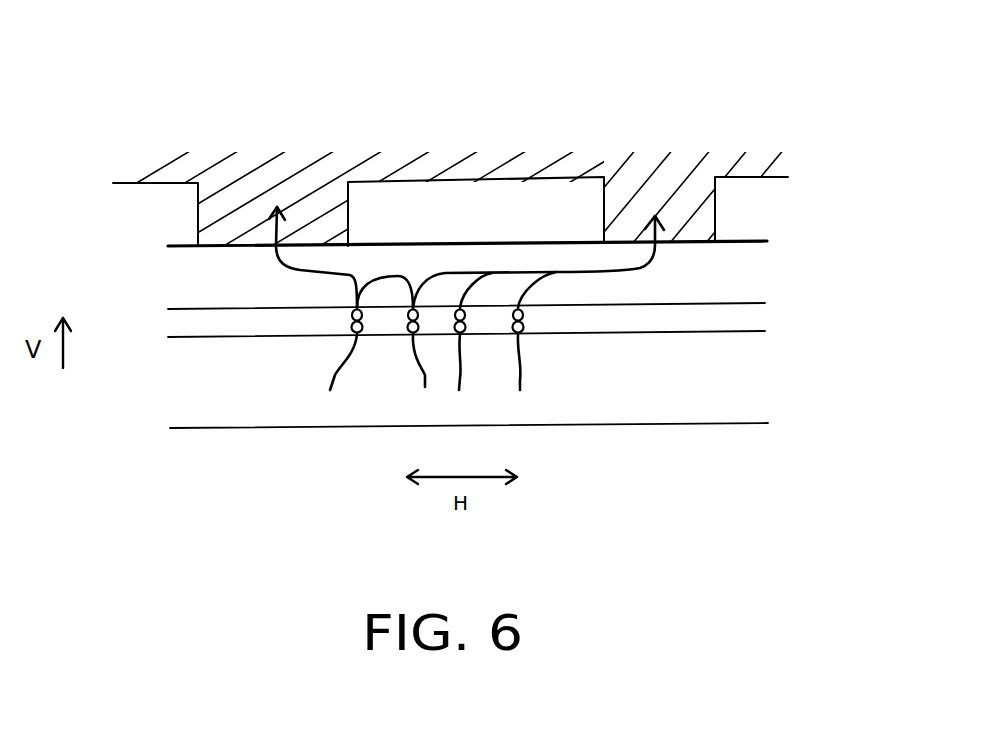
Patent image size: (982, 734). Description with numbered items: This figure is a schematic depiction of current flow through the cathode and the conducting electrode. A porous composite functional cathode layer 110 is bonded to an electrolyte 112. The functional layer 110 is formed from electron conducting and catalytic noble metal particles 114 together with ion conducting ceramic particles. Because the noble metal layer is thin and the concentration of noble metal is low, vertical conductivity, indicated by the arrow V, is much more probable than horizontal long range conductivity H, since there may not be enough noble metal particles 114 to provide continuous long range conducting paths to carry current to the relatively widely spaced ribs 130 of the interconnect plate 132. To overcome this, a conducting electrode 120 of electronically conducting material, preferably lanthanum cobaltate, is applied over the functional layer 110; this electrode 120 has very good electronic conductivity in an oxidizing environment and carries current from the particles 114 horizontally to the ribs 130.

The ribs 130 is at (329, 217).
The interconnect plate 132 is at (543, 130).
The conducting electrode 120 is at (737, 279).
The composite functional cathode layer 110 is at (744, 324).
The electrolyte 112 is at (753, 392).
The noble metal particles 114 is at (400, 340).